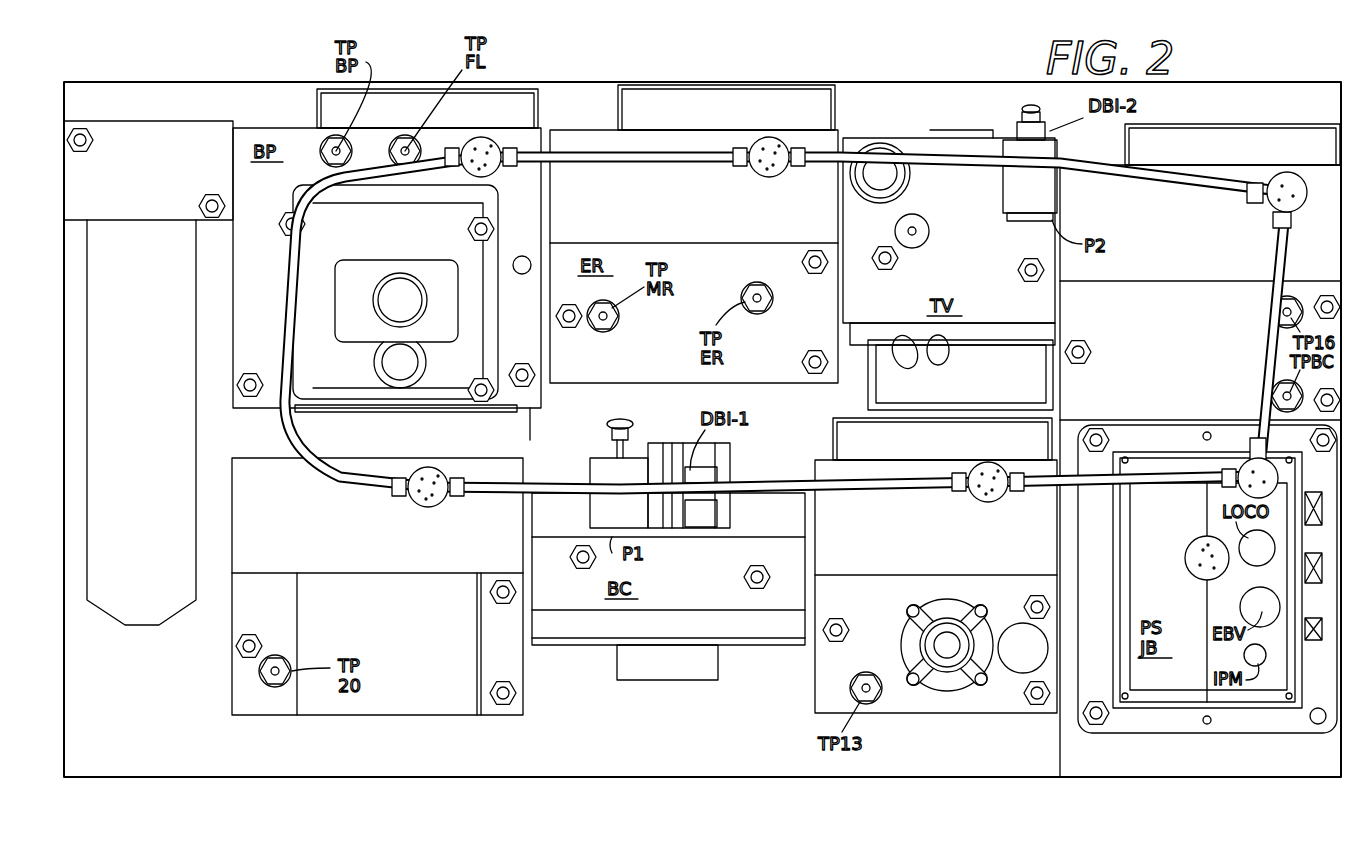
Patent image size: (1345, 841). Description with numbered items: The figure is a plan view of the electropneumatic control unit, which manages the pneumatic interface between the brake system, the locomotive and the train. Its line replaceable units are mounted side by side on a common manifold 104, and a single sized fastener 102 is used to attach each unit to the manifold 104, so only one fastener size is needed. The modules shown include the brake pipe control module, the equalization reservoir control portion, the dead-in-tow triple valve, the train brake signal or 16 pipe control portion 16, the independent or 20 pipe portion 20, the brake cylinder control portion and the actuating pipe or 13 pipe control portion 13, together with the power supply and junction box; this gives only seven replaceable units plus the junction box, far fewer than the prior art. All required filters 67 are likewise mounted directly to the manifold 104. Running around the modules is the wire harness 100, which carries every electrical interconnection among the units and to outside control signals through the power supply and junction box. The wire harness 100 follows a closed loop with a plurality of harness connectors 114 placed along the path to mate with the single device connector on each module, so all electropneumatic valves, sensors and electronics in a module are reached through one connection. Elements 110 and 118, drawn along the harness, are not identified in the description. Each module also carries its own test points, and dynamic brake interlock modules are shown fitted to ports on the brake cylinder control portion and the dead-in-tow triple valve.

The wire harness 100 is at (590, 128).
The fastener 102 is at (83, 138).
The manifold 104 is at (275, 92).
The pneumatic hose 110 is at (667, 165).
The harness connector 114 is at (492, 128).
The coupling 118 is at (762, 175).
The filter 67 is at (130, 594).
The 13 pipe control portion 13 is at (866, 607).
The 16 pipe control portion 16 is at (1122, 310).
The 20 pipe portion 20 is at (350, 604).